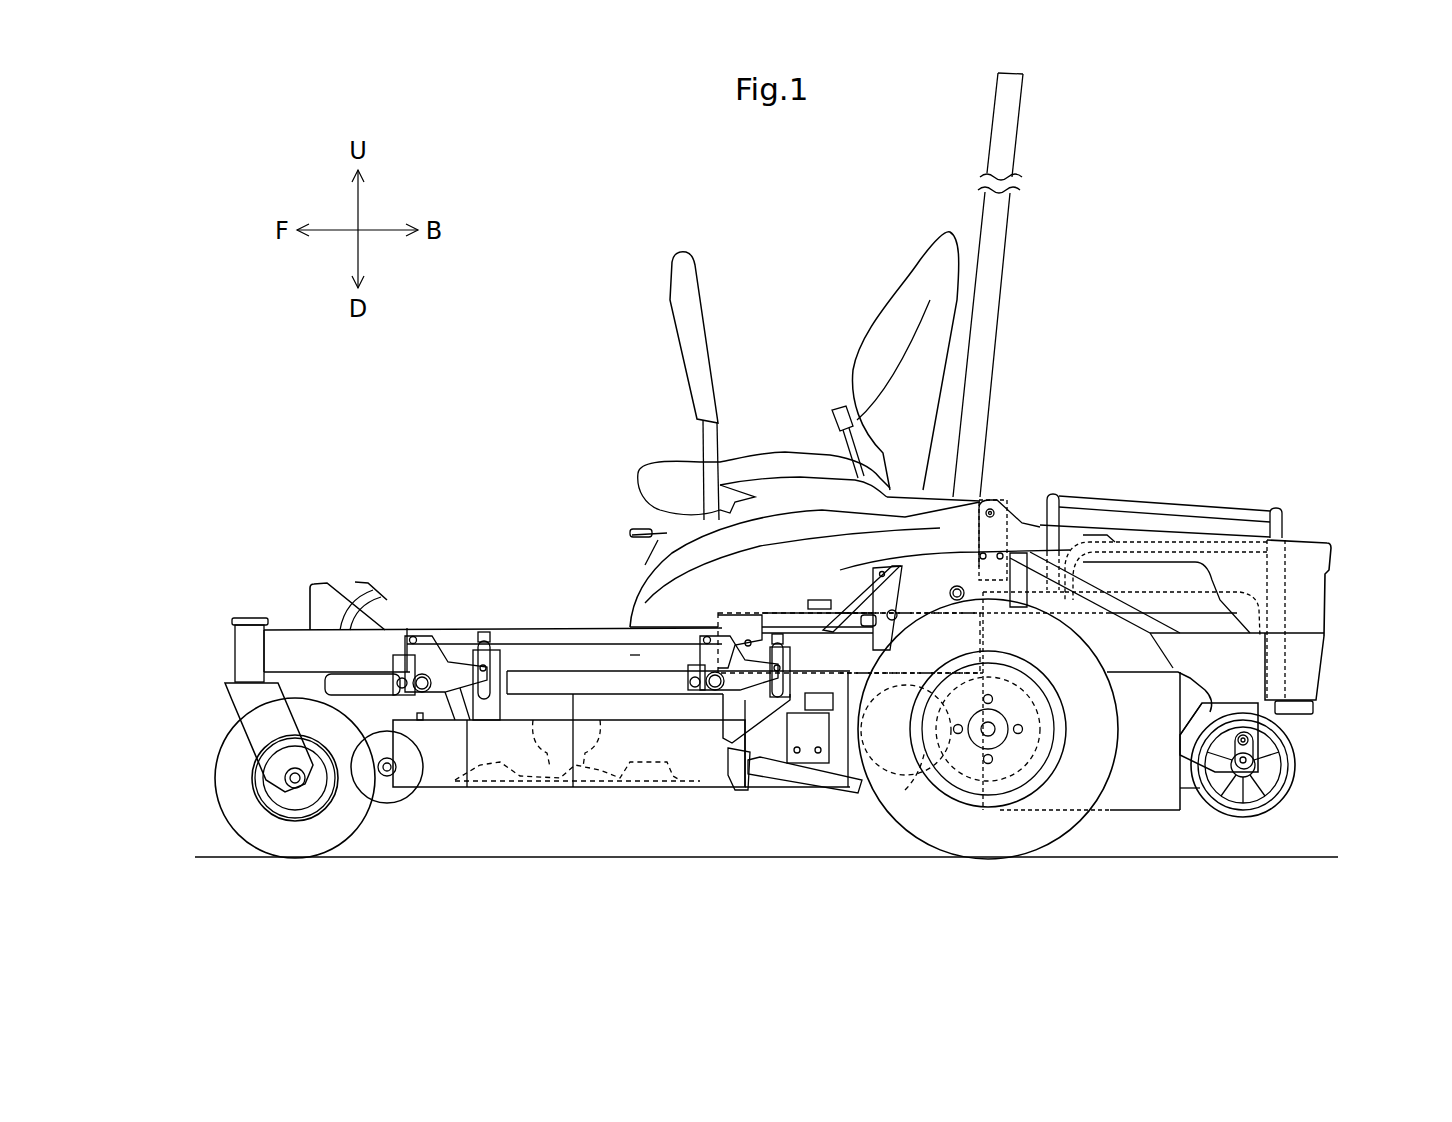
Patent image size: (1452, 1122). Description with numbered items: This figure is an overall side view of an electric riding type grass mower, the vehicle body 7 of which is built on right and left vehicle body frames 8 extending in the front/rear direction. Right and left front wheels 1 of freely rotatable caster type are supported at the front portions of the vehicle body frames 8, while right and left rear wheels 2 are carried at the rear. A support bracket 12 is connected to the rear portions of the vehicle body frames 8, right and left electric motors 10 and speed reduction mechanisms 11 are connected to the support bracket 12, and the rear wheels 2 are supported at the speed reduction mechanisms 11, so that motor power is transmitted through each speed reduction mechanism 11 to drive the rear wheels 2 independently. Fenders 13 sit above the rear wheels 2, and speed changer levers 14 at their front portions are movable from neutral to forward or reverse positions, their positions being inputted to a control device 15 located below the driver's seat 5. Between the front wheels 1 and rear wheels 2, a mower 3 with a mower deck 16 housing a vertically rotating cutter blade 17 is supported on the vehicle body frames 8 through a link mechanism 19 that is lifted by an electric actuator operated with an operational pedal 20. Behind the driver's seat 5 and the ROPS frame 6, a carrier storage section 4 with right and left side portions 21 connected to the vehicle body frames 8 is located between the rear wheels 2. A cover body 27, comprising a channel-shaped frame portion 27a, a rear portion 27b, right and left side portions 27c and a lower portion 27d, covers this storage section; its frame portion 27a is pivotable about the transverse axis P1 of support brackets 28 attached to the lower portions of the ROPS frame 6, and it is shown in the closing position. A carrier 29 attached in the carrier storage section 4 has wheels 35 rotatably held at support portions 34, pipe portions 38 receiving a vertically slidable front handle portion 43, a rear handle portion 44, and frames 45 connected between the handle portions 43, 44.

The front wheel 1 is at (222, 797).
The rear wheel 2 is at (928, 833).
The mower 3 is at (658, 790).
The carrier storage section 4 is at (1133, 815).
The driver's seat 5 is at (893, 315).
The ROPS frame 6 is at (1003, 248).
The vehicle body 7 is at (290, 625).
The vehicle body frame 8 is at (410, 632).
The electric motor 10 is at (868, 793).
The speed reduction mechanism 11 is at (915, 790).
The support bracket 12 is at (848, 778).
The fender 13 is at (801, 503).
The speed changer lever 14 is at (680, 340).
The control device 15 is at (795, 610).
The mower deck 16 is at (527, 787).
The cutter blade 17 is at (625, 787).
The link mechanism 19 is at (527, 620).
The operational pedal 20 is at (376, 590).
The side portion 21 is at (1110, 800).
The cover body 27 is at (1303, 536).
The frame portion 27a is at (1151, 530).
The rear portion 27b is at (1327, 593).
The side portion 27c is at (1316, 665).
The lower portion 27d is at (1300, 713).
The support bracket 28 is at (978, 530).
The carrier 29 is at (1138, 498).
The support portion 34 is at (1212, 715).
The wheel 35 is at (1298, 775).
The pipe portion 38 is at (1053, 588).
The front handle portion 43 is at (1053, 494).
The rear handle portion 44 is at (1276, 508).
The frame 45 is at (1216, 507).
The transverse axis P1 is at (993, 508).